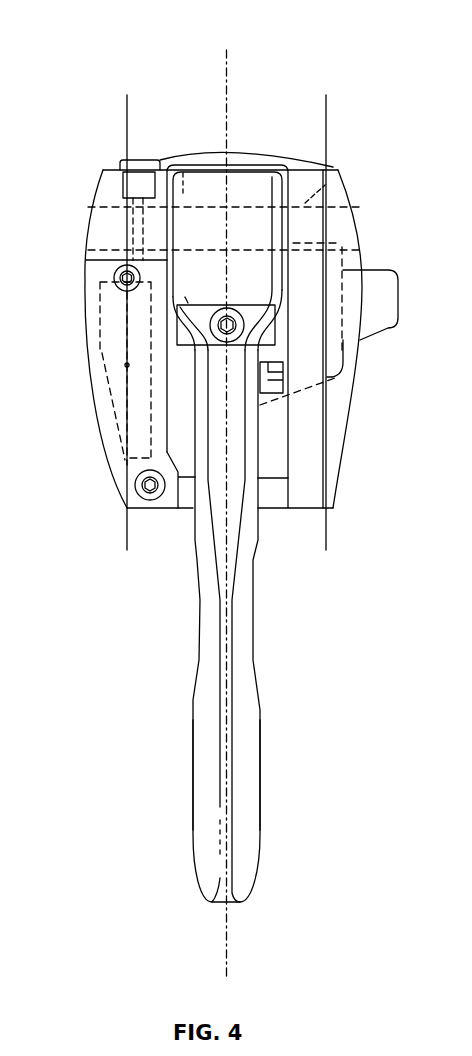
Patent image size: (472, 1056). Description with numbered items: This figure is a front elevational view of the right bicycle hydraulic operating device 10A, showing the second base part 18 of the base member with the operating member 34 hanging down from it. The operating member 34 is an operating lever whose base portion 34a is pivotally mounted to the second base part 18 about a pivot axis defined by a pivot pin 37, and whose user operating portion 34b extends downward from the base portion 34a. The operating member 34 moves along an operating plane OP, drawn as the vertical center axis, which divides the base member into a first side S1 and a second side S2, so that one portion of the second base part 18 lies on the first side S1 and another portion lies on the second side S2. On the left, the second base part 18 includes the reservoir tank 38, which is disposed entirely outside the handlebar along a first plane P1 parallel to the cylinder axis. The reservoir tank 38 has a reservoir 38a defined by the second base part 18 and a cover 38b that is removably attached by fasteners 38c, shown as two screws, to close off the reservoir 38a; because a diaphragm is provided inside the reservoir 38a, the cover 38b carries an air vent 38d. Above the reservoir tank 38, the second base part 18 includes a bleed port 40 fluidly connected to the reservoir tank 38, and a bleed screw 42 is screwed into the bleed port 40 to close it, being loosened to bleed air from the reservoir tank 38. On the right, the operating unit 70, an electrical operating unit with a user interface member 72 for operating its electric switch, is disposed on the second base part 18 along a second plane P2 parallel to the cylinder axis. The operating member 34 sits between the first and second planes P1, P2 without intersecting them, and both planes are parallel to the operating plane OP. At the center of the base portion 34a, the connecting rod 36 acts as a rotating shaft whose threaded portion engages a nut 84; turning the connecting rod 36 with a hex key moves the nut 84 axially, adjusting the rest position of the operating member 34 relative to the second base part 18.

The bicycle hydraulic operating device 10A is at (147, 80).
The second base part 18 is at (300, 155).
The bleed screw 42 is at (139, 156).
The operating member 34 is at (260, 595).
The base portion 34a is at (257, 170).
The user operating portion 34b is at (260, 785).
The connecting rod 36 is at (218, 313).
The pivot pin 37 is at (325, 185).
The bleed port 40 is at (130, 222).
The user interface member 72 is at (383, 270).
The nut 84 is at (277, 340).
The operating unit 70 is at (339, 384).
The reservoir tank 38 is at (102, 467).
The reservoir 38a is at (112, 423).
The cover 38b is at (92, 357).
The fasteners 38c is at (114, 277).
The air vent 38d is at (125, 367).
The first plane P1 is at (127, 533).
The second plane P2 is at (327, 533).
The first side S1 is at (268, 106).
The second side S2 is at (208, 106).
The operating plane OP is at (225, 960).